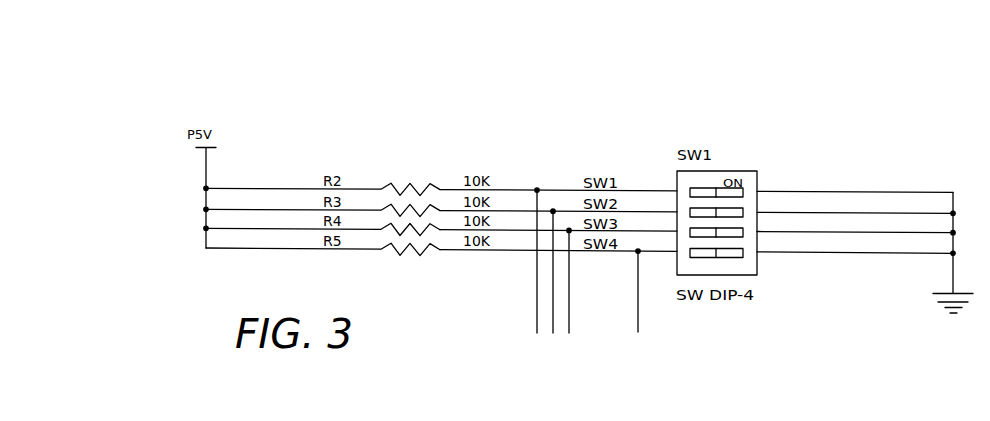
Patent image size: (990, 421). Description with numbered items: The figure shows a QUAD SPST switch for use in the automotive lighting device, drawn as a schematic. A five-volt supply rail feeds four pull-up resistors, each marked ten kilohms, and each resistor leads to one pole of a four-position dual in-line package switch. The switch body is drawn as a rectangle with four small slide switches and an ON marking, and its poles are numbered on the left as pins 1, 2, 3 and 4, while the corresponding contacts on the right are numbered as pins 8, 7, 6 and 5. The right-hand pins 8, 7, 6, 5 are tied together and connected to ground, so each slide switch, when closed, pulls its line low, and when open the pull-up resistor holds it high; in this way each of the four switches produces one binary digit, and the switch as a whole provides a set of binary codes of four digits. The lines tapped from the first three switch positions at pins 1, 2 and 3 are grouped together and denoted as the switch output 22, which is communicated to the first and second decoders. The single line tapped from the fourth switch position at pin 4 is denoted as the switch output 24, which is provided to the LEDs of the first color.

The switch output 22 is at (575, 348).
The switch output 24 is at (642, 308).
The DIP switch pin 1 is at (558, 183).
The DIP switch pin 2 is at (558, 204).
The DIP switch pin 3 is at (558, 224).
The DIP switch pin 4 is at (558, 244).
The DIP switch pin 5 is at (855, 245).
The DIP switch pin 6 is at (855, 225).
The DIP switch pin 7 is at (855, 205).
The DIP switch pin 8 is at (855, 184).